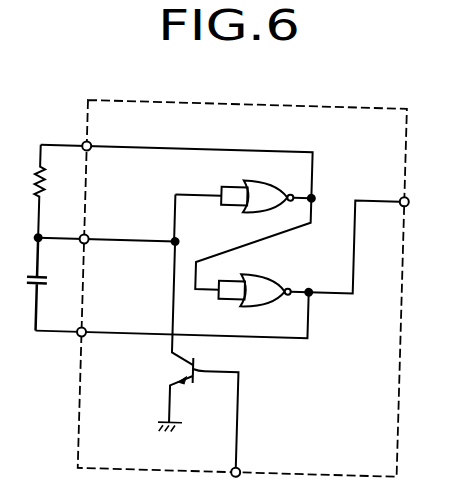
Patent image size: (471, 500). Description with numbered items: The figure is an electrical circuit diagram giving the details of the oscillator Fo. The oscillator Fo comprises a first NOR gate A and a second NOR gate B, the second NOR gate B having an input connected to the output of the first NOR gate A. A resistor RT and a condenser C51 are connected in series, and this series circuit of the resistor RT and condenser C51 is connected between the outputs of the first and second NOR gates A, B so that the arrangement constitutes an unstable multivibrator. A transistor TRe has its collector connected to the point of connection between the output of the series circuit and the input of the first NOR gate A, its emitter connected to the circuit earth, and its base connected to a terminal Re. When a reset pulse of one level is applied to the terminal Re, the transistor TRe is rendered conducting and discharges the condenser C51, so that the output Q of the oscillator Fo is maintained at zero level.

The oscillator Fo is at (368, 111).
The resistor RT is at (49, 192).
The condenser C51 is at (50, 284).
The first NOR gate A is at (266, 198).
The second NOR gate B is at (263, 292).
The output Q is at (365, 241).
The transistor TRe is at (198, 412).
The terminal Re is at (248, 458).